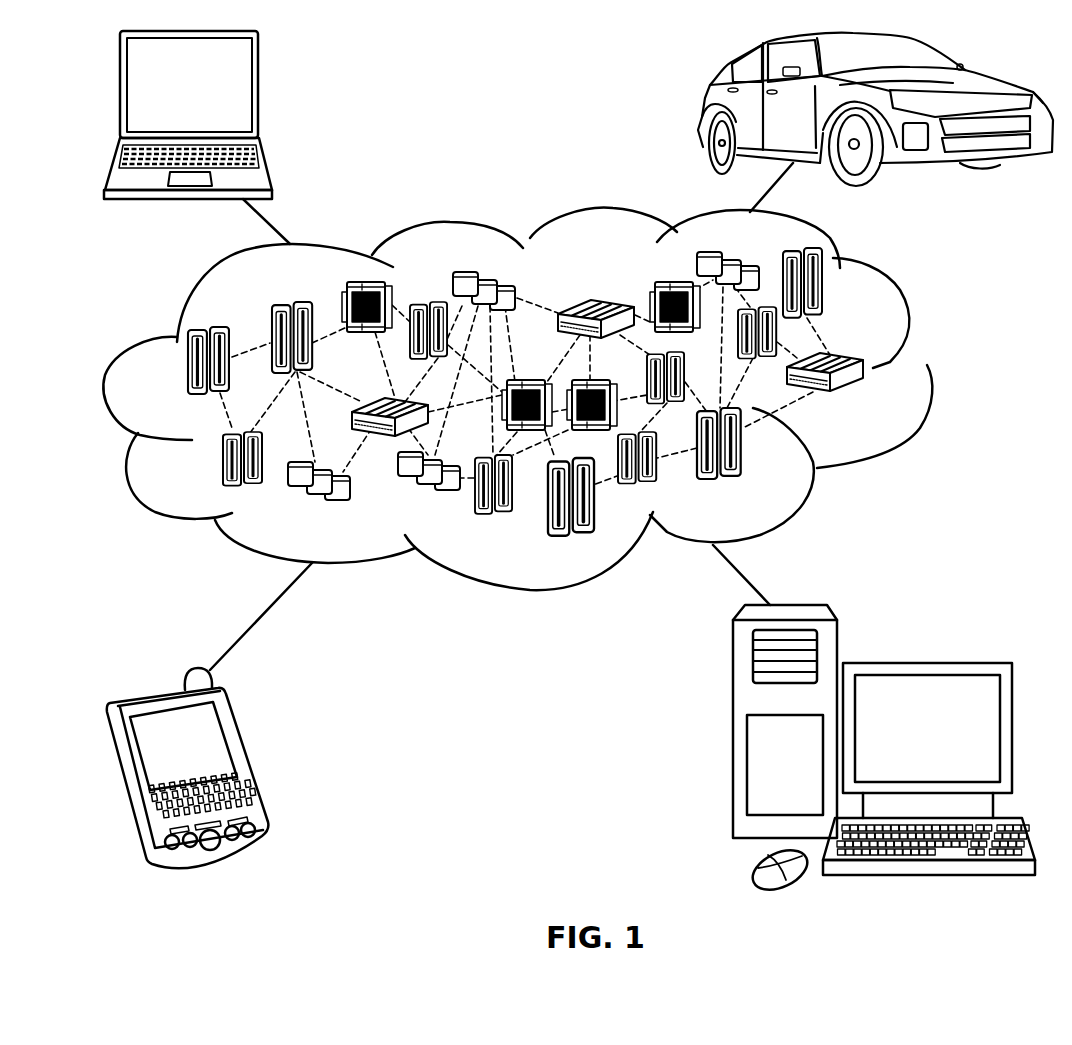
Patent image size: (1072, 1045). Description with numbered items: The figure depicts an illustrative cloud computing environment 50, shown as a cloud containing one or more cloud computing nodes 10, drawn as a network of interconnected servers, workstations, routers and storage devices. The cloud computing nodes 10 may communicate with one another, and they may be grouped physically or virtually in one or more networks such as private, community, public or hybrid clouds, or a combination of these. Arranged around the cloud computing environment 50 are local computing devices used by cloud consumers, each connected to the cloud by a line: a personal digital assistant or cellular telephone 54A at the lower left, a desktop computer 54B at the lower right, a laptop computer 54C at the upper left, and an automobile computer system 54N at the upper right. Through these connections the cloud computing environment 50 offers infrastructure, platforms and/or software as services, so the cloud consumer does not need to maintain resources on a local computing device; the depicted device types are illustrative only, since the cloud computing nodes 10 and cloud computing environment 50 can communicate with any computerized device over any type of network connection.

The laptop computer 54C is at (259, 92).
The automobile computer system 54N is at (700, 108).
The personal digital assistant (PDA) or cellular telephone 54A is at (248, 758).
The desktop computer 54B is at (925, 662).
The cloud computing environment 50 is at (927, 372).
The cloud computing nodes 10 is at (875, 404).